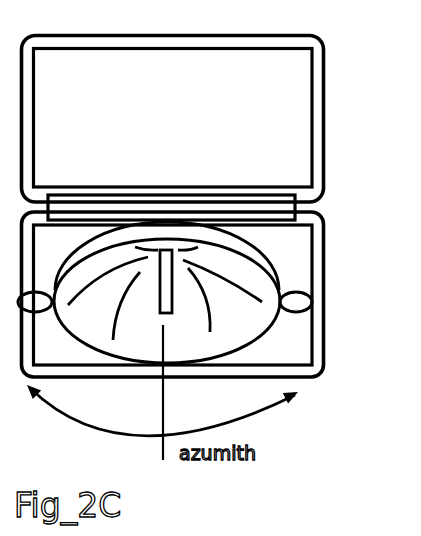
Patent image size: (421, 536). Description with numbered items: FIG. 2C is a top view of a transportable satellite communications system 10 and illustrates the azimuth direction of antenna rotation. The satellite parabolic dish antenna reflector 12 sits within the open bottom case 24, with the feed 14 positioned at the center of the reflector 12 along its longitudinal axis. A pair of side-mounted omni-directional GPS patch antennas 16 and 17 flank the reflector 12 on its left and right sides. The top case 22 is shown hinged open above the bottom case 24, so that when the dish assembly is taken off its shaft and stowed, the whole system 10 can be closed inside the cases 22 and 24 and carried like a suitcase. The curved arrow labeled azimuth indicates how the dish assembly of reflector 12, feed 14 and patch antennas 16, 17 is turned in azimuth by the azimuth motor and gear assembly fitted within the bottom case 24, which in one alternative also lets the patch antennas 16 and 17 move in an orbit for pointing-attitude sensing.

The satellite communications system 10 is at (215, 190).
The satellite parabolic dish antenna reflector 12 is at (248, 342).
The feed 14 is at (167, 313).
The omni-directional GPS patch antenna 16 is at (40, 292).
The omni-directional GPS patch antenna 17 is at (293, 292).
The top case 22 is at (278, 37).
The bottom case 24 is at (323, 340).